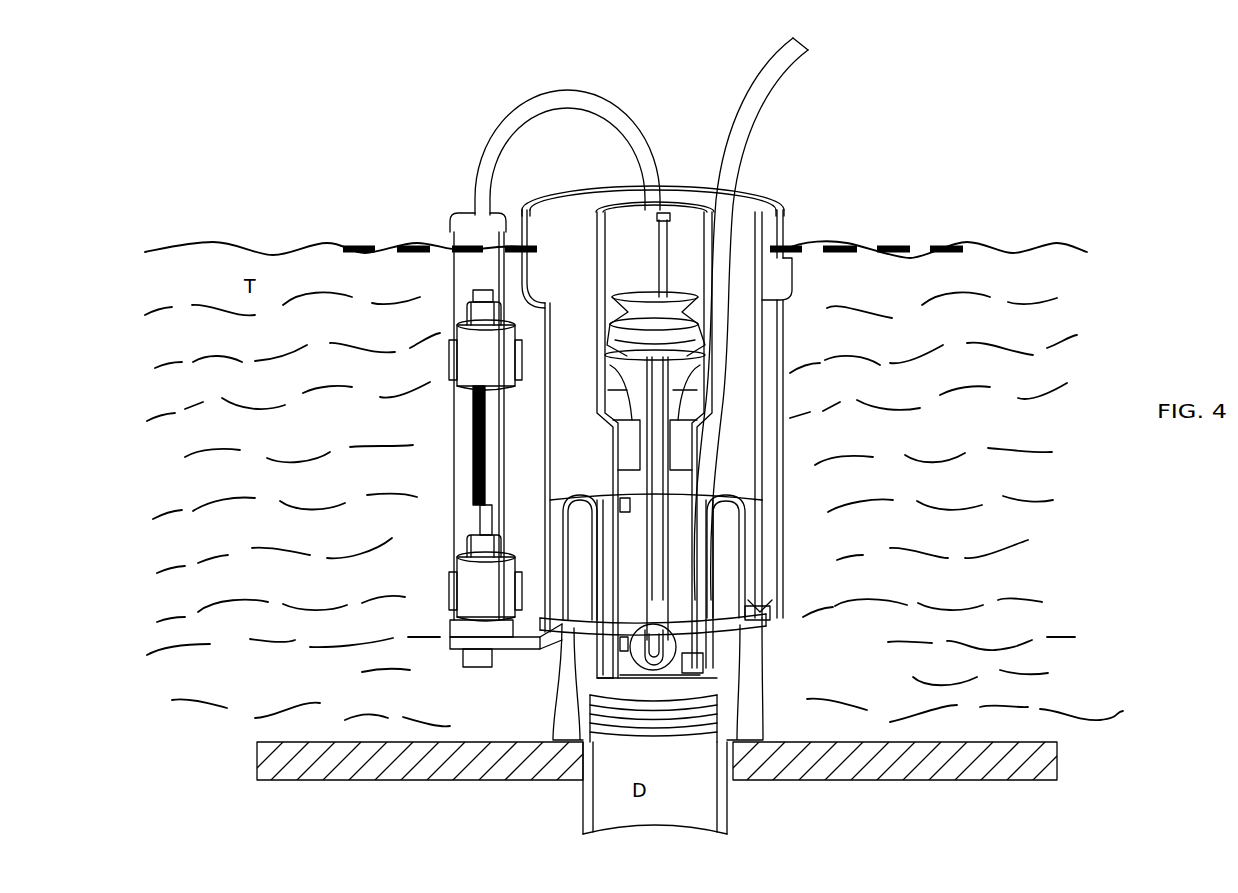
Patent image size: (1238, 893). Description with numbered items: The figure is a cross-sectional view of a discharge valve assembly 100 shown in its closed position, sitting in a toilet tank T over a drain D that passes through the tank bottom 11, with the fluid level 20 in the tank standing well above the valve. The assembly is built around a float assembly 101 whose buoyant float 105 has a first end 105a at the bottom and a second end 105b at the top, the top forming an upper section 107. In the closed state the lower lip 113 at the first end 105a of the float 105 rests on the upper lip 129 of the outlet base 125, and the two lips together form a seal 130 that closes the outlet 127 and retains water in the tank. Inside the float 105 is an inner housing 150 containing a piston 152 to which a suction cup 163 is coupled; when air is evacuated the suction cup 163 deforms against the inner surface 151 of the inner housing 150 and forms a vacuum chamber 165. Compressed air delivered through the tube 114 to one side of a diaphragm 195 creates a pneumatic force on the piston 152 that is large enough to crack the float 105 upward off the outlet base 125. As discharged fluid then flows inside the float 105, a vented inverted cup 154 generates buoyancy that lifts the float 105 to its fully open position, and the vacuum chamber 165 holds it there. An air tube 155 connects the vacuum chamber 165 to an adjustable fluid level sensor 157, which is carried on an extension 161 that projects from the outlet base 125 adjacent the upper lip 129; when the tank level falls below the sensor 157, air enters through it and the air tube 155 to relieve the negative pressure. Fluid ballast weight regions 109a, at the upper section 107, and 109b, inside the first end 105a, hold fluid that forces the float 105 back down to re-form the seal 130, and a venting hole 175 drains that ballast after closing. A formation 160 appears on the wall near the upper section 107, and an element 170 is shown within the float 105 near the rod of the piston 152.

The floor / tank bottom 11 is at (265, 763).
The water surface level 20 is at (942, 248).
The discharge valve assembly 100 is at (831, 122).
The float assembly 101 is at (793, 206).
The buoyant float 105 is at (763, 430).
The first end 105a is at (547, 538).
The second end 105b is at (778, 200).
The upper section 107 is at (783, 213).
The ballast weight region 109a is at (742, 197).
The ballast weight region 109b is at (757, 569).
The lower lip 113 is at (760, 610).
The tube 114 is at (752, 108).
The outlet base 125 is at (742, 692).
The outlet 127 is at (630, 826).
The upper lip 129 is at (764, 630).
The seal 130 is at (765, 618).
The inner housing 150 is at (669, 212).
The inner surface 151 is at (620, 220).
The piston 152 is at (663, 470).
The vented inverted cup 154 is at (590, 500).
The air tube 155 is at (513, 118).
The adjustable fluid level sensor 157 is at (463, 376).
The housing notch 160 is at (778, 301).
The extension 161 is at (507, 650).
The suction cup 163 is at (627, 314).
The vacuum chamber 165 is at (660, 320).
The retaining clip 170 is at (630, 506).
The venting hole 175 is at (762, 616).
The diaphragm 195 is at (638, 665).